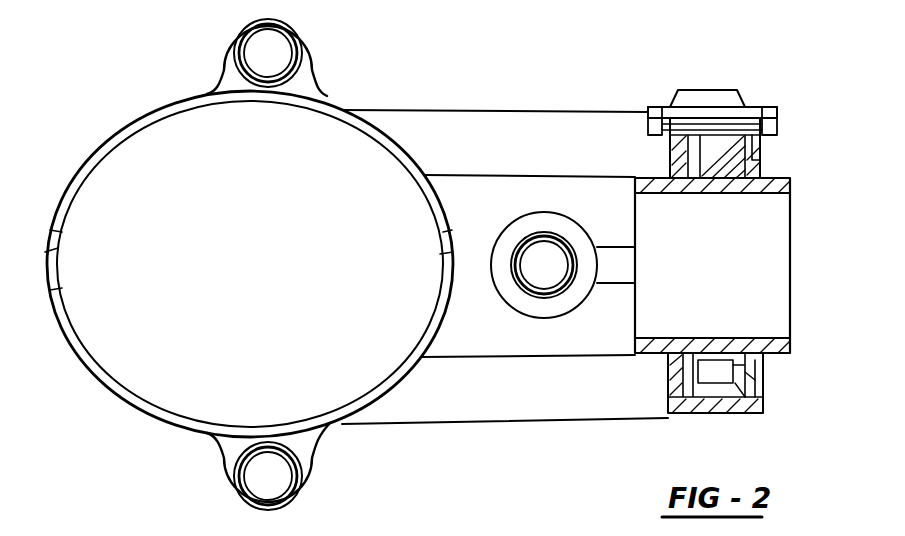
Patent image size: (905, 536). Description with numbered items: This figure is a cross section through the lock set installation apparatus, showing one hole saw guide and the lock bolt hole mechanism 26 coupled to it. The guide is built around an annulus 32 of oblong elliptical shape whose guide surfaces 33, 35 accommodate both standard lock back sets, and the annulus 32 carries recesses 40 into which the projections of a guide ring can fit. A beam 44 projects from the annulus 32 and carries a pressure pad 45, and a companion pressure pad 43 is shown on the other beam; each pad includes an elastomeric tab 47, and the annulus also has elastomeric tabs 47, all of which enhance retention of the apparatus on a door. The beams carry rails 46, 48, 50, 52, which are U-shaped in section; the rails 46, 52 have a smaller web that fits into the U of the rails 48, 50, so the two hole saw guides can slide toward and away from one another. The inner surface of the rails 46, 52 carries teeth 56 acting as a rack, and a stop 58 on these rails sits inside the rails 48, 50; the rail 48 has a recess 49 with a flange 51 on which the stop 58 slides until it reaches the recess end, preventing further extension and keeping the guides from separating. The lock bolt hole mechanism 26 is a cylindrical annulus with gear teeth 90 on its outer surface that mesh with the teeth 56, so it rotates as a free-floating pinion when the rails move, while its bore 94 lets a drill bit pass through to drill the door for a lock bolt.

The lock bolt hole mechanism 26 is at (792, 256).
The annulus 32 is at (157, 419).
The guide surface 33 is at (60, 296).
The guide surface 35 is at (430, 330).
The recess 40 is at (58, 248).
The pressure pad 43 is at (270, 53).
The beam 44 is at (457, 133).
The pressure pad 45 is at (583, 252).
The rail 46 is at (767, 170).
The elastomeric tab 47 is at (269, 472).
The rail 48 is at (703, 385).
The recess 49 is at (752, 117).
The rail 50 is at (767, 142).
The flange 51 is at (760, 165).
The rail 52 is at (755, 385).
The teeth 56 is at (705, 373).
The stop 58 is at (760, 387).
The gear teeth 90 is at (712, 150).
The bore 94 is at (775, 335).